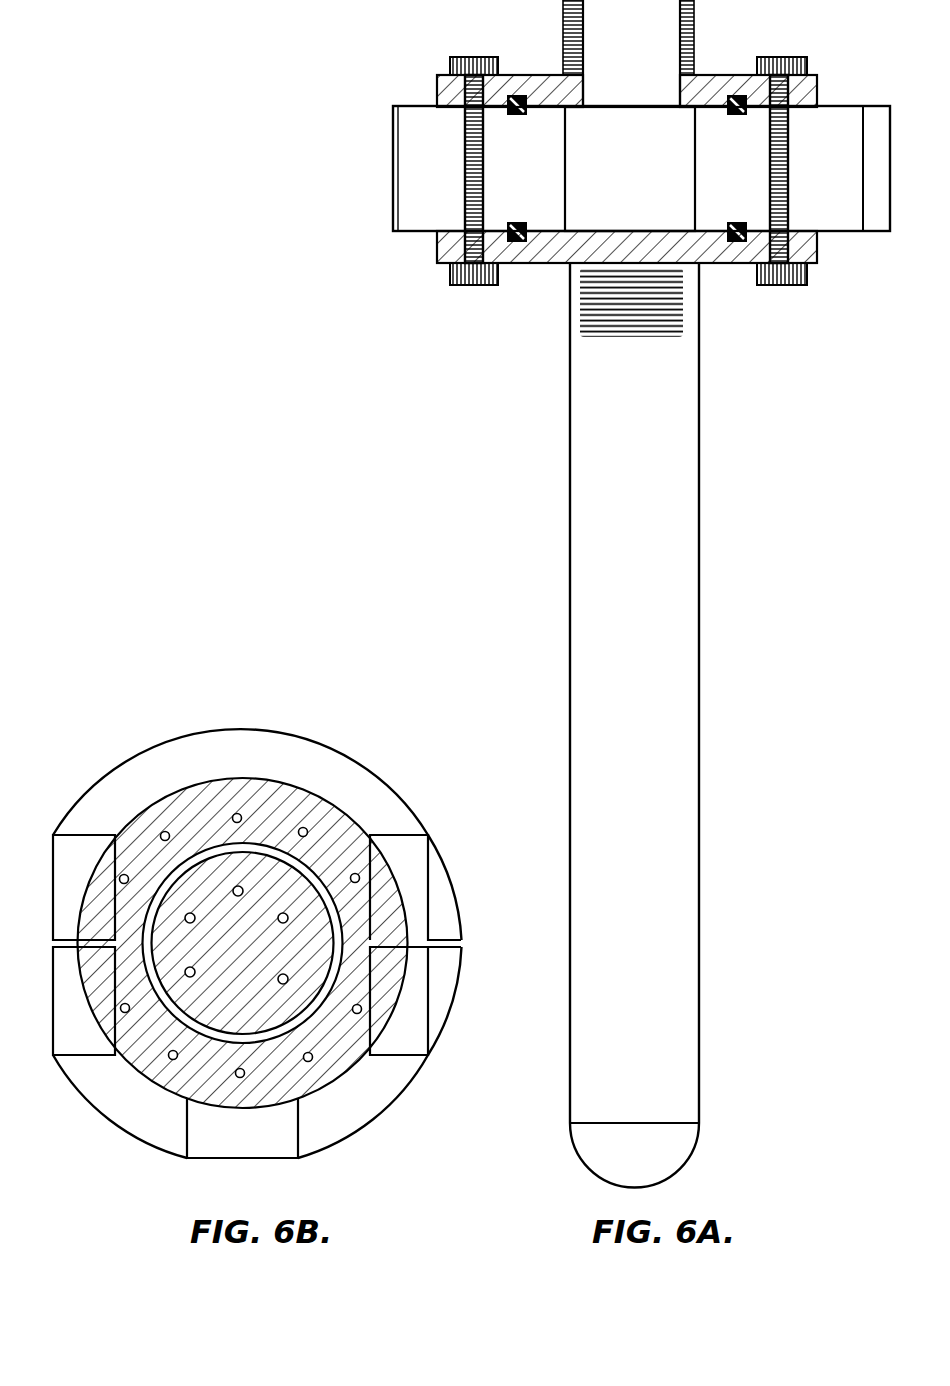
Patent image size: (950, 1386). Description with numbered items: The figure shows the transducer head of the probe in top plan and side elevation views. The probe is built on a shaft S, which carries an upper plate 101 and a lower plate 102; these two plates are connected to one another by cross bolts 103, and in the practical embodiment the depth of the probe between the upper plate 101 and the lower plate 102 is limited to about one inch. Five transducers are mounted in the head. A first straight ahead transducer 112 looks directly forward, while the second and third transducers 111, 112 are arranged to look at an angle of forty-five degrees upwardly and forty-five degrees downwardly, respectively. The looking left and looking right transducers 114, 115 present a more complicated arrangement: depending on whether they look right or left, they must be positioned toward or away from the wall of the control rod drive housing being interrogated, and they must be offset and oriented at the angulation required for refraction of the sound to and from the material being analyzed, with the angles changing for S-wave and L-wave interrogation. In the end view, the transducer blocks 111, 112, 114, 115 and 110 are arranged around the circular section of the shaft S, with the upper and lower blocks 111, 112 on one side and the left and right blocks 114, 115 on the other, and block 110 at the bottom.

In FIG. 6A, the shaft S is at (638, 536).
In FIG. 6A, the upper plate 101 is at (513, 74).
In FIG. 6A, the lower plate 102 is at (544, 264).
In FIG. 6A, the cross bolts 103 is at (466, 57).
In FIG. 6B, the bottom insert block 110 is at (252, 1160).
In FIG. 6B, the second transducer 111 is at (51, 848).
In FIG. 6B, the first straight ahead transducer 112 is at (53, 1056).
In FIG. 6B, the looking left transducer 114 is at (432, 884).
In FIG. 6B, the looking right transducer 115 is at (431, 992).